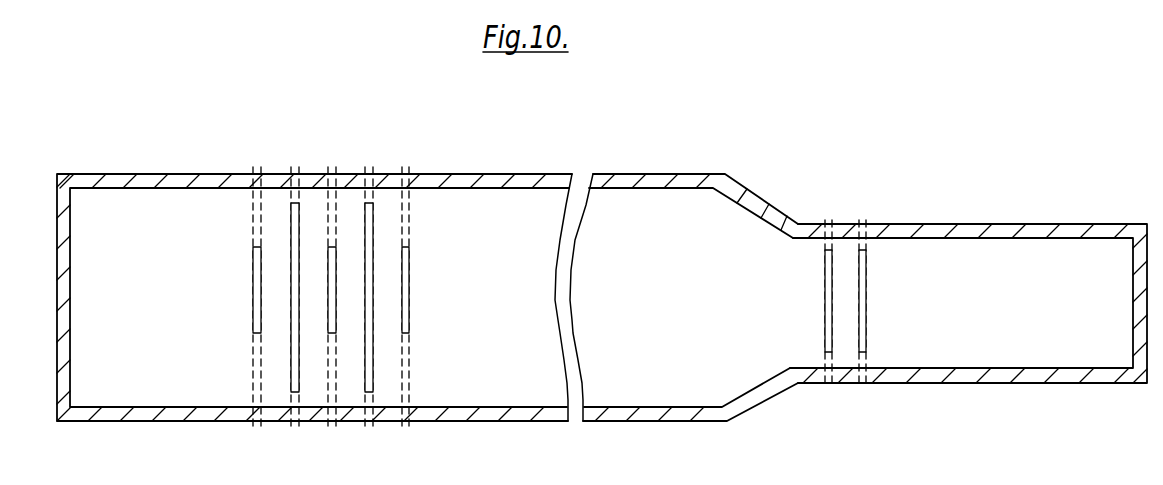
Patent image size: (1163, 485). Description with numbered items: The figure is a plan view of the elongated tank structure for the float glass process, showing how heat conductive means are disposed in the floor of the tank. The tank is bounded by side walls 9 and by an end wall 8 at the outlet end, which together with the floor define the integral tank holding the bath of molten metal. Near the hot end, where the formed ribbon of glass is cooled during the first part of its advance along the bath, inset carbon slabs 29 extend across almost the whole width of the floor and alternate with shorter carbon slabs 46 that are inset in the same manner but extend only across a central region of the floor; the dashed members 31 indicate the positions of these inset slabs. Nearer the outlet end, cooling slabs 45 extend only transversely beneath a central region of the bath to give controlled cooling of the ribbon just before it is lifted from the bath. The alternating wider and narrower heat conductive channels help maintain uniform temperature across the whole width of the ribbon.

The end wall 8 is at (1131, 229).
The side walls 9 is at (712, 178).
The inset carbon slabs 29 is at (291, 347).
The plate holder (dashed) 31 is at (370, 166).
The cooling slabs 45 is at (825, 301).
The shorter carbon slabs 46 is at (253, 290).